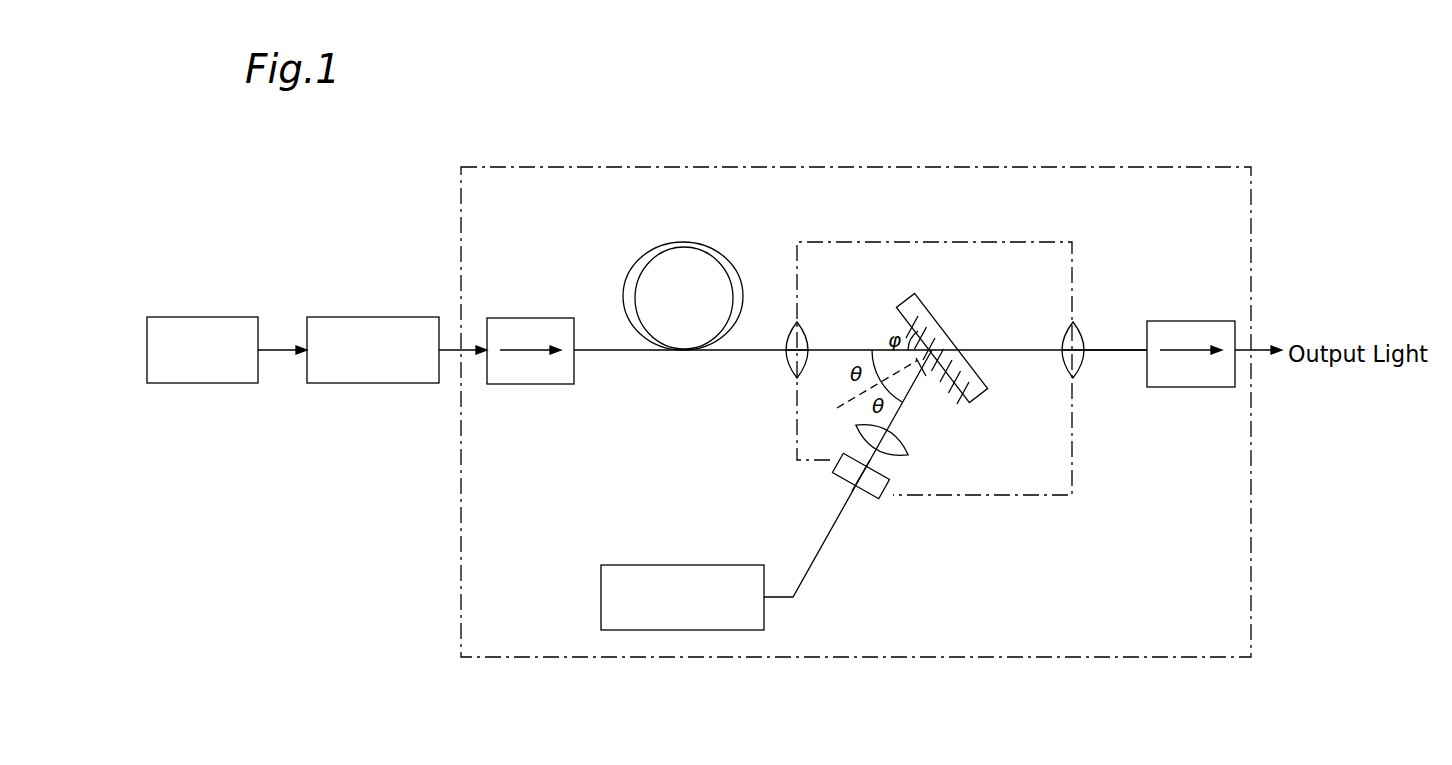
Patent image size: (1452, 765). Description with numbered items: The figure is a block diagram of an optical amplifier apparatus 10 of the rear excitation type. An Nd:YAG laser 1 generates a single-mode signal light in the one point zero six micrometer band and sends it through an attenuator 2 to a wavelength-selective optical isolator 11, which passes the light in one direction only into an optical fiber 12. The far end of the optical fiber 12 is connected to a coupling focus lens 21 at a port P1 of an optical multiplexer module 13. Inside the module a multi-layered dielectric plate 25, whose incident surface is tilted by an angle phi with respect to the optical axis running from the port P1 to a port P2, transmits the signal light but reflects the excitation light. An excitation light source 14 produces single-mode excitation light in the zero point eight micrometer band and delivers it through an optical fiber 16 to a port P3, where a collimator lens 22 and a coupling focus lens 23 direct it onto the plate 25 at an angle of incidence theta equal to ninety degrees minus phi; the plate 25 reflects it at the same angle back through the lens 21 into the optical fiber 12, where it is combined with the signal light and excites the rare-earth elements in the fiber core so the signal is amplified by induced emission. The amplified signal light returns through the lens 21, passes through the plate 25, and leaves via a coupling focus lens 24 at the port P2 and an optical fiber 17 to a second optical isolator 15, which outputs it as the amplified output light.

The Nd:YAG laser 1 is at (208, 317).
The attenuator 2 is at (370, 317).
The optical amplifier apparatus 10 is at (1095, 137).
The optical isolator 11 is at (526, 318).
The optical fiber 12 is at (727, 250).
The optical multiplexer module 13 is at (897, 242).
The excitation light source 14 is at (690, 565).
The optical isolator 15 is at (1185, 321).
The optical fiber 16 is at (813, 562).
The optical fiber 17 is at (1113, 355).
The coupling focus lens 21 is at (805, 340).
The collimator lens 22 is at (889, 480).
The coupling focus lens 23 is at (908, 452).
The coupling focus lens 24 is at (1060, 340).
The multi-layered dielectric plate 25 is at (943, 313).
The port P1 is at (785, 350).
The port P2 is at (1085, 345).
The port P3 is at (857, 490).